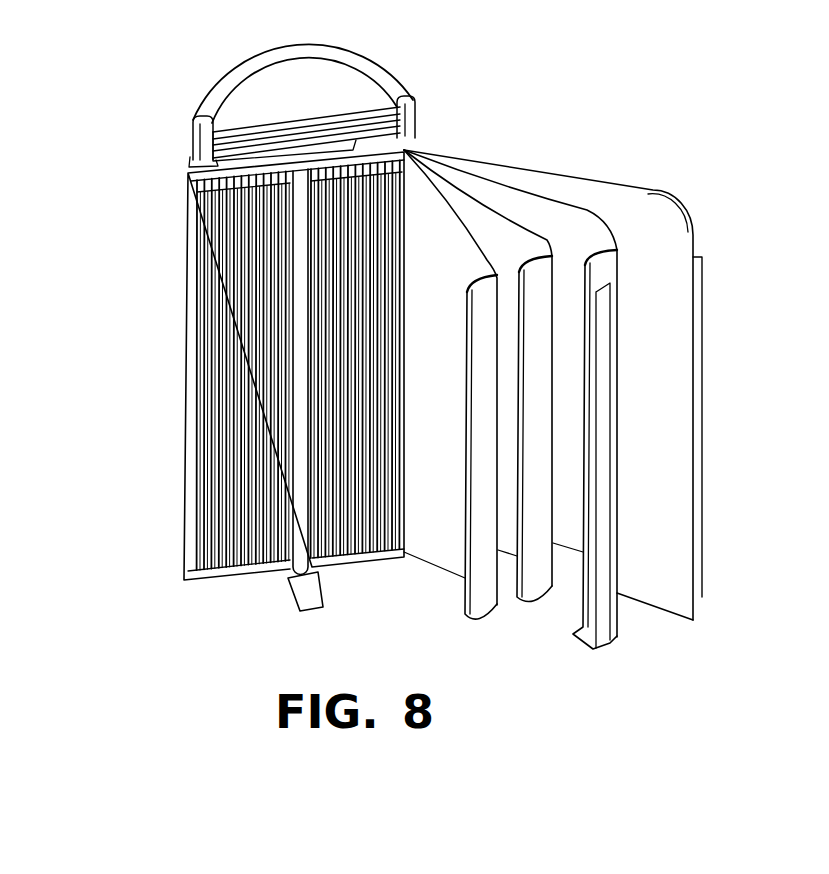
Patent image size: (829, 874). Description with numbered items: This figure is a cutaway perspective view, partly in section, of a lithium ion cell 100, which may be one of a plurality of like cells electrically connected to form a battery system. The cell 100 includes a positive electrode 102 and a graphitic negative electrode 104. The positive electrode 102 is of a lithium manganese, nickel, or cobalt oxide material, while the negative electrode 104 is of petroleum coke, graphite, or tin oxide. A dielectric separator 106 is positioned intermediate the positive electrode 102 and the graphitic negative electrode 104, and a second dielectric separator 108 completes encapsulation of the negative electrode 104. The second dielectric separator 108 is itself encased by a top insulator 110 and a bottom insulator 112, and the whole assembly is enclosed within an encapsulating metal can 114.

The lithium ion cell 100 is at (428, 76).
The positive electrode 102 is at (423, 215).
The graphitic negative electrode 104 is at (556, 230).
The dielectric separator 106 is at (492, 230).
The second dielectric separator 108 is at (636, 215).
The top insulator 110 is at (250, 157).
The bottom insulator 112 is at (240, 580).
The encapsulating metal can 114 is at (188, 274).